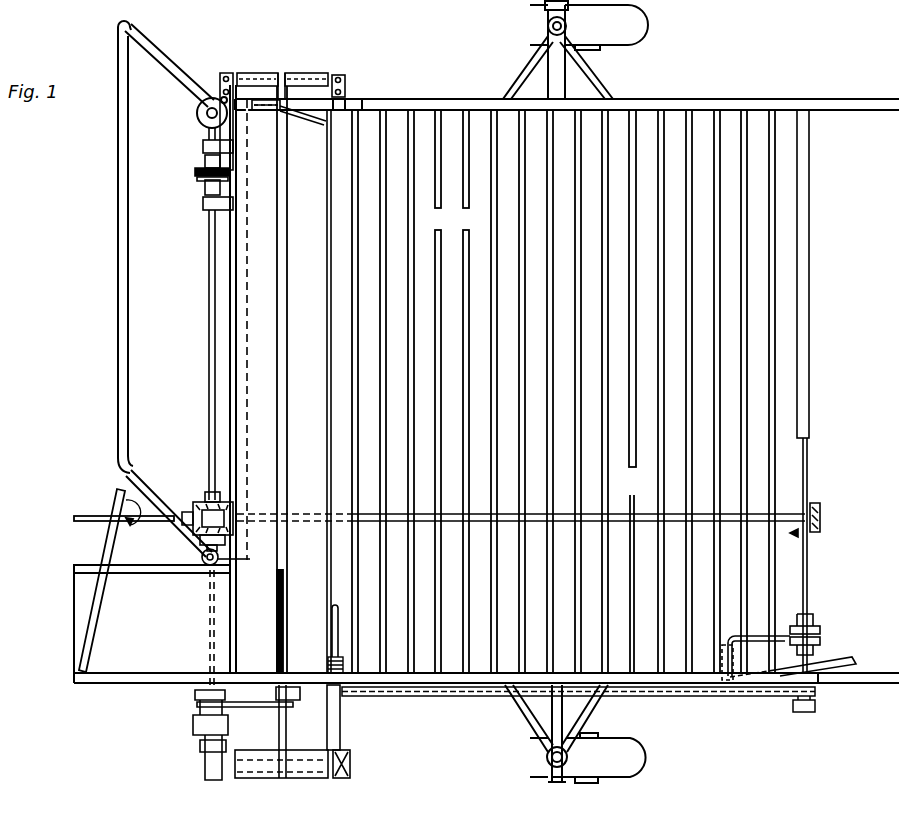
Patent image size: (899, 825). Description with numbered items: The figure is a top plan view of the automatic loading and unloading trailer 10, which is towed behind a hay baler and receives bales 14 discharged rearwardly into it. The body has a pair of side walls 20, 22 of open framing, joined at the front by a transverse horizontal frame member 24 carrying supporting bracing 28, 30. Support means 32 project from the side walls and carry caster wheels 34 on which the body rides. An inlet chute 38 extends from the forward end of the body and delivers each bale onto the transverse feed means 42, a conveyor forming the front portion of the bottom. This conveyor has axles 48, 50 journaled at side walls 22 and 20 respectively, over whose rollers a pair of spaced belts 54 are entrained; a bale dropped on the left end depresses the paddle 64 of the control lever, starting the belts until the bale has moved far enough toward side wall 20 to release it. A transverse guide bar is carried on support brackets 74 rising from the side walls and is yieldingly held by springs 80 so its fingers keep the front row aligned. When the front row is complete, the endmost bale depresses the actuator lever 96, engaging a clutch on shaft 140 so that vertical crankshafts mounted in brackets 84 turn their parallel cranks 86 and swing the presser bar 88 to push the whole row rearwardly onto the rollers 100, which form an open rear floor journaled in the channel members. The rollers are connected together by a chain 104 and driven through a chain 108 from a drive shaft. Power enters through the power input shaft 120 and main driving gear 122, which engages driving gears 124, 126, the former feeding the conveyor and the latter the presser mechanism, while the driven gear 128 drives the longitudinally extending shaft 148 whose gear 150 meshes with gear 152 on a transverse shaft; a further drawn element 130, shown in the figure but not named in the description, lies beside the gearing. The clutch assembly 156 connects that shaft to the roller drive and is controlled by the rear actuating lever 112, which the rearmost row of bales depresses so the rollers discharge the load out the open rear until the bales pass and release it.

The automatic loading and unloading trailer 10 is at (424, 96).
The bale 14 is at (194, 172).
The side wall 20 is at (708, 108).
The side wall 22 is at (459, 687).
The transverse horizontal frame member 24 is at (240, 293).
The supporting bracing 28 is at (160, 684).
The supporting bracing 30 is at (105, 544).
The support means 32 is at (596, 80).
The caster wheel 34 is at (626, 31).
The inlet chute 38 is at (118, 678).
The transverse feed means 42 is at (345, 720).
The axle 48 is at (284, 766).
The axle 50 is at (284, 73).
The belt 54 is at (318, 612).
The paddle or pedal 64 is at (284, 598).
The support bracket 74 is at (340, 633).
The spring 80 is at (330, 661).
The bracket 84 is at (220, 557).
The crank 86 is at (169, 73).
The presser bar 88 is at (118, 205).
The actuator lever 96 is at (340, 80).
The rollers 100 is at (488, 268).
The chain 104 is at (698, 698).
The chain 108 is at (814, 706).
The actuating lever 112 is at (848, 661).
The power input shaft 120 is at (98, 512).
The main driving gear 122 is at (194, 510).
The driving gear 124 is at (202, 556).
The driving gear 126 is at (207, 497).
The driven gear 128 is at (237, 516).
The link 130 is at (207, 586).
The shaft 140 is at (209, 330).
The longitudinally and rearwardly extending shaft 148 is at (610, 513).
The gear 150 is at (820, 516).
The gear 152 is at (808, 534).
The clutch assembly 156 is at (821, 632).